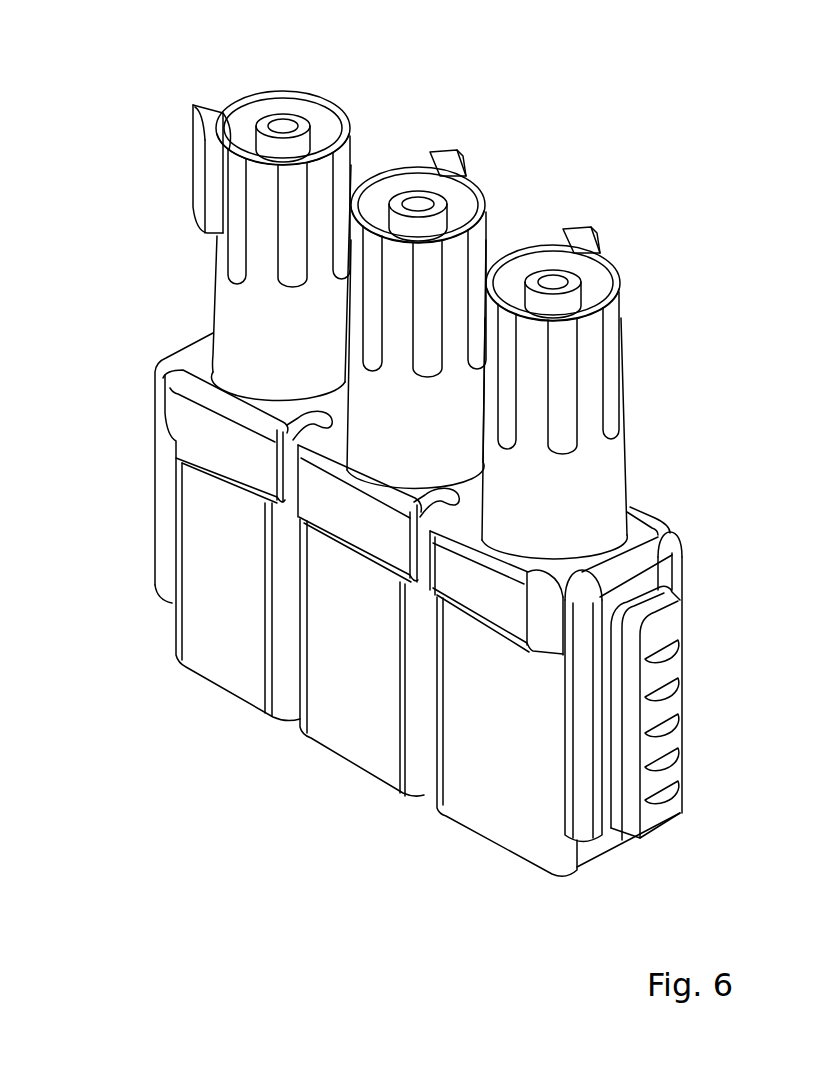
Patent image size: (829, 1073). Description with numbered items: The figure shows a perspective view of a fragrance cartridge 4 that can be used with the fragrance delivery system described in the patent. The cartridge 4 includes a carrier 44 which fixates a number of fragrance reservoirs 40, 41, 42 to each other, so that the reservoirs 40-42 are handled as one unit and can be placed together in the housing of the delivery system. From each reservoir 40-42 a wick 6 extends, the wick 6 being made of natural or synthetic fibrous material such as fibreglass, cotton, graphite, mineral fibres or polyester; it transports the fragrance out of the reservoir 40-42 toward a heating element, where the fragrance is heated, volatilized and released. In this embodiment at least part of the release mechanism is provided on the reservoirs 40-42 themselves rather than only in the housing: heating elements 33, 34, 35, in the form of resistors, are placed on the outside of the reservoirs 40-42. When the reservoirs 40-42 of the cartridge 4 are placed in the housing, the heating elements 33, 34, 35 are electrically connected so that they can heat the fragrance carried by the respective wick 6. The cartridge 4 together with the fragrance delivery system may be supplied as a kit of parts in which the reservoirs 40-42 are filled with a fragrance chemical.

The fragrance cartridge 4 is at (258, 870).
The wick 6 is at (283, 125).
The heating element 33 is at (203, 168).
The heating element 34 is at (446, 158).
The heating element 35 is at (580, 237).
The fragrance reservoir 40 is at (233, 668).
The fragrance reservoir 41 is at (362, 743).
The fragrance reservoir 42 is at (499, 821).
The carrier 44 is at (203, 419).